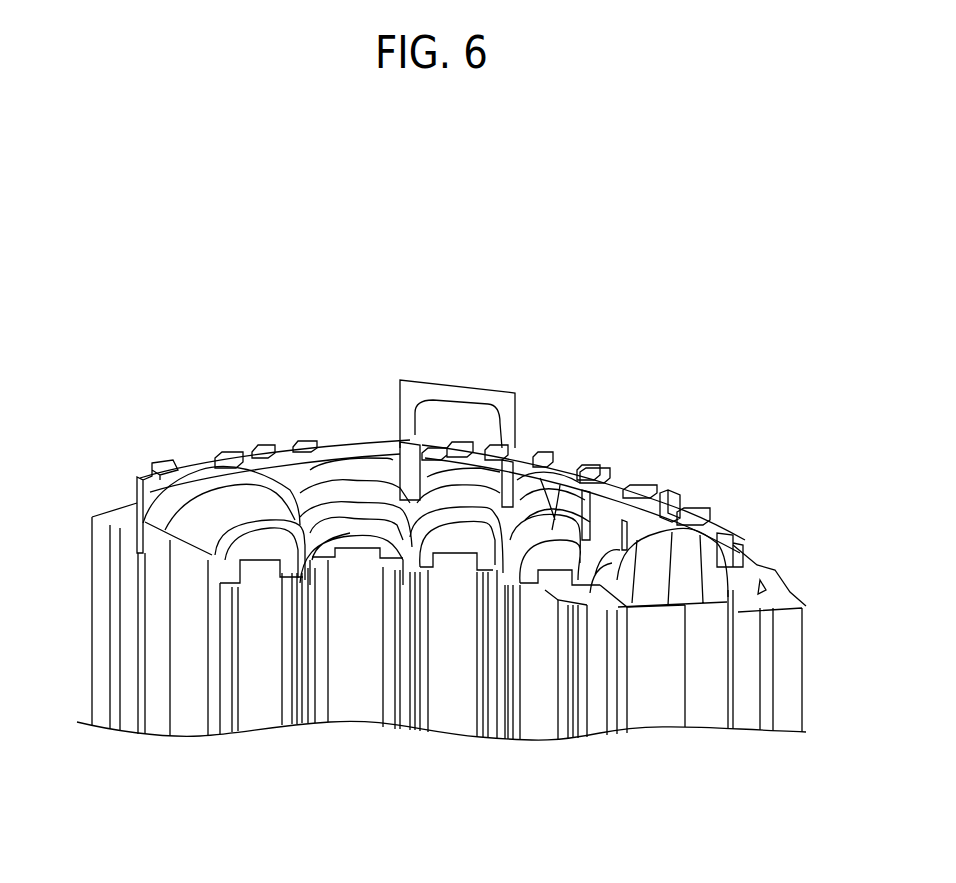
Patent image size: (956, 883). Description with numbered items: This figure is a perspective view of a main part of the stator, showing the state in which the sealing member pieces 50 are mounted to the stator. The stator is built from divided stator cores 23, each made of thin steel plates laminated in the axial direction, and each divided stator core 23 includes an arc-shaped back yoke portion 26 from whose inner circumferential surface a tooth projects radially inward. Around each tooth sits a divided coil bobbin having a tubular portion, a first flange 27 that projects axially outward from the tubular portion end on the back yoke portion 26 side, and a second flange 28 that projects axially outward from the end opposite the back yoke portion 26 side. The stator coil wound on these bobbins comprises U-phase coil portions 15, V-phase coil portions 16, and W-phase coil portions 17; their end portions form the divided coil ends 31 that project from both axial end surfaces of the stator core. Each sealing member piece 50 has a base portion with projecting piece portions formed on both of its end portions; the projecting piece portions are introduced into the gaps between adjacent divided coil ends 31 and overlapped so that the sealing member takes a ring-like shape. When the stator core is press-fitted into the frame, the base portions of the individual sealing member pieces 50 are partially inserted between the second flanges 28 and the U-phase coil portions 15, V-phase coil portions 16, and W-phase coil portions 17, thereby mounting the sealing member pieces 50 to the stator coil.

The U-phase coil portion 15 is at (170, 497).
The V-phase coil portion 16 is at (348, 470).
The W-phase coil portion 17 is at (463, 485).
The divided stator core 23 is at (785, 712).
The back yoke portion 26 is at (108, 508).
The first flange 27 is at (380, 440).
The second flange 28 is at (338, 530).
The divided coil end 31 is at (472, 493).
The sealing member piece 50 is at (235, 468).